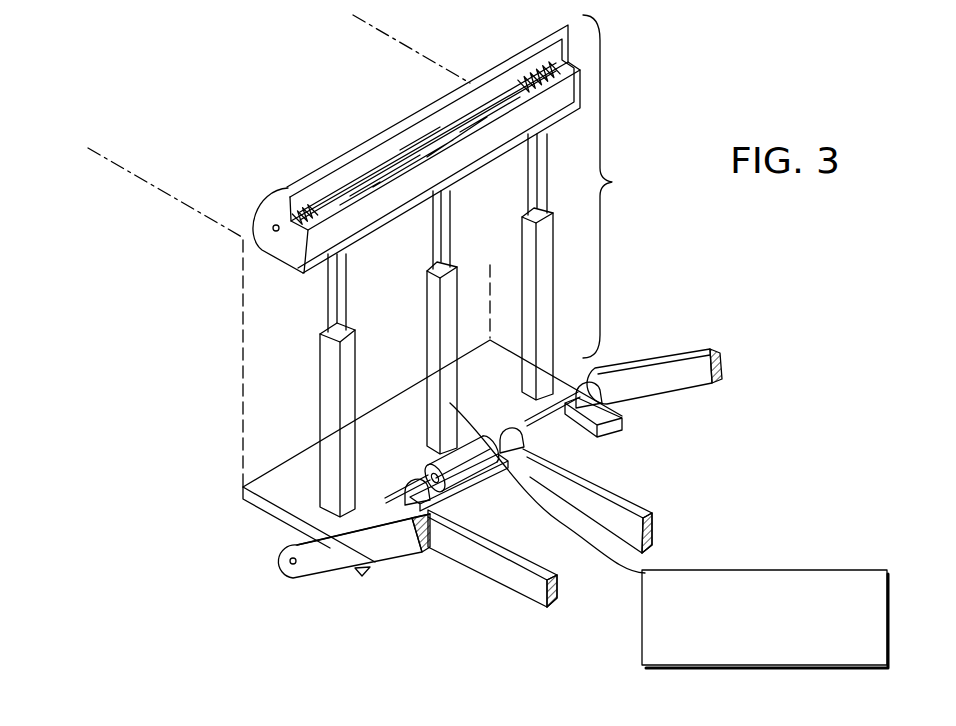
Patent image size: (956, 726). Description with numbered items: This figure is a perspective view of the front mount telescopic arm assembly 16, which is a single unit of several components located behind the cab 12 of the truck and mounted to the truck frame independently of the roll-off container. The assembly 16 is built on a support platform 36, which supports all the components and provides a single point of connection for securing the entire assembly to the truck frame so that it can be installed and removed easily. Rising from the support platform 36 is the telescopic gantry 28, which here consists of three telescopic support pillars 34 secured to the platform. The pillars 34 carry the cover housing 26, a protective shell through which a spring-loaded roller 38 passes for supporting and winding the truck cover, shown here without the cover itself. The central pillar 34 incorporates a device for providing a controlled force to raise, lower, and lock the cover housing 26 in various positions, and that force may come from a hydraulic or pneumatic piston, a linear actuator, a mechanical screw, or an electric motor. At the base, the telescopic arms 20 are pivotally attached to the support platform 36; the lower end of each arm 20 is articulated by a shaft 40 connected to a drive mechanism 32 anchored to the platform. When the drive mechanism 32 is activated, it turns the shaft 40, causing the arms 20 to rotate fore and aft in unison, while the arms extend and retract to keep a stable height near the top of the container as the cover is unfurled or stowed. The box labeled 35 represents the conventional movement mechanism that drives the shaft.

The cab 12 is at (162, 157).
The front mount telescopic arm assembly 16 is at (215, 508).
The telescopic arms 20 is at (670, 357).
The cover housing 26 is at (266, 238).
The telescopic gantry 28 is at (472, 186).
The drive mechanism 32 is at (460, 468).
The telescopic support pillars 34 is at (530, 283).
The conventional movement mechanism 35 is at (745, 570).
The support platform 36 is at (287, 515).
The spring-loaded roller 38 is at (503, 98).
The shaft 40 is at (622, 432).